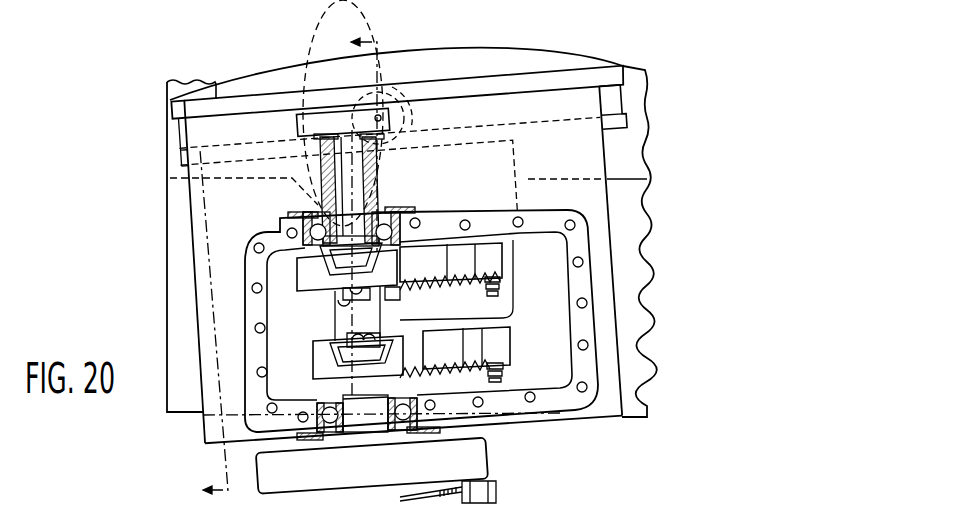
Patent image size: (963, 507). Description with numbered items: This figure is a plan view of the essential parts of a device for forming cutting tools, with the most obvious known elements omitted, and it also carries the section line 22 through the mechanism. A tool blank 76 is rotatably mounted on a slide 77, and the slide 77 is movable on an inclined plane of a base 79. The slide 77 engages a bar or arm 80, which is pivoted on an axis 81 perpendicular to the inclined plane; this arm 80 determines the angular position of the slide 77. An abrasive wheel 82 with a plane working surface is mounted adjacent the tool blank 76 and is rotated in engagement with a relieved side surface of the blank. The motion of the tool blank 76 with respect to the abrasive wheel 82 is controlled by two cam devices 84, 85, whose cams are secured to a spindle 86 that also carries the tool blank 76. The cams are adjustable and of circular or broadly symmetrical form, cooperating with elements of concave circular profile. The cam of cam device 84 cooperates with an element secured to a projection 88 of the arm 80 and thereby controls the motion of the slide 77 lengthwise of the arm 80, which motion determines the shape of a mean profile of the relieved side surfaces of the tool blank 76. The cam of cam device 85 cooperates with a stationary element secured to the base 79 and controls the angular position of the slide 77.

The section line 22- 22 is at (288, 261).
The tool blank 76 is at (297, 126).
The slide 77 is at (200, 247).
The base 79 is at (180, 295).
The bar or arm 80 is at (603, 77).
The axis 81 is at (392, 104).
The abrasive wheel 82 is at (313, 37).
The cam device 84 is at (407, 267).
The cam device 85 is at (450, 328).
The spindle 86 is at (340, 318).
The projection 88 is at (503, 250).